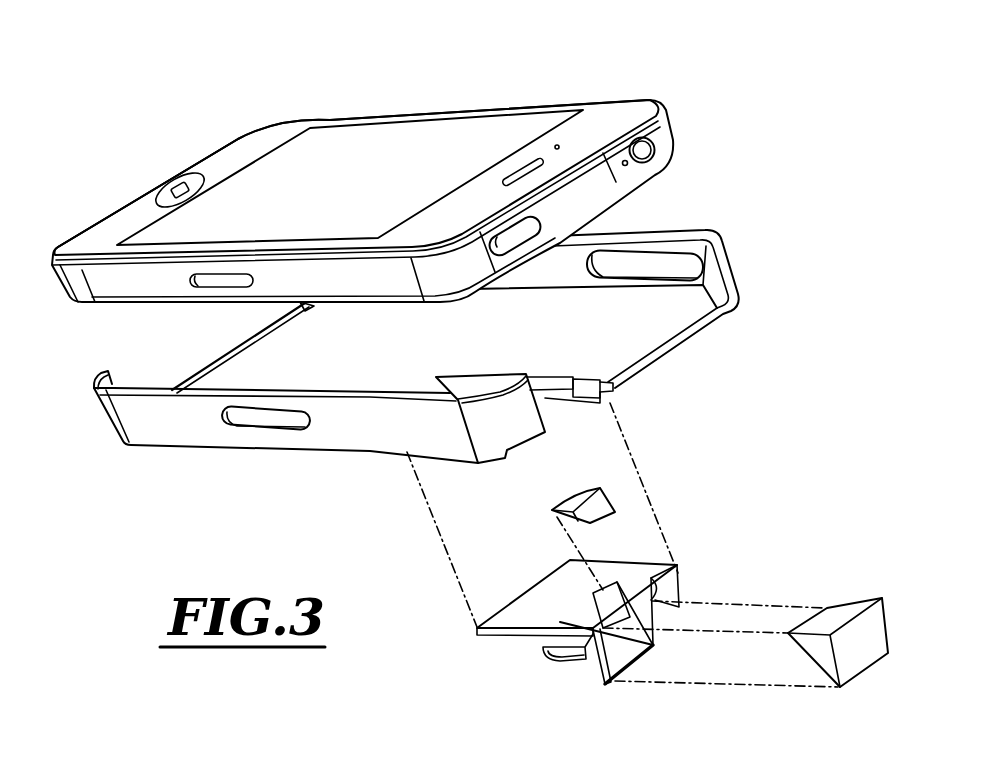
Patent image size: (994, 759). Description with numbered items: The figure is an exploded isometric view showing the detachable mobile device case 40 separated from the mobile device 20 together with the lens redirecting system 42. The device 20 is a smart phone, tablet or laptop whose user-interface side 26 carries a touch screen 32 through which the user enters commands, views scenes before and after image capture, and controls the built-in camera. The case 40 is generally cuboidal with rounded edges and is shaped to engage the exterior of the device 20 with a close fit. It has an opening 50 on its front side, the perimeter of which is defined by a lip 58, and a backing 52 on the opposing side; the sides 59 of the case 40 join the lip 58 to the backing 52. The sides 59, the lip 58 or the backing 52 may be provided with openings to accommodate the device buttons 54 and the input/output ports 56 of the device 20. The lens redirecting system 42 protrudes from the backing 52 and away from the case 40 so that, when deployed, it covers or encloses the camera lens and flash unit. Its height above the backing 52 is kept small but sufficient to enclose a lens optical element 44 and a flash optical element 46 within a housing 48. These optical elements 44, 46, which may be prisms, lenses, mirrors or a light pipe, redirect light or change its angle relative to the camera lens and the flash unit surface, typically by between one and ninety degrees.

The mobile device 20 is at (407, 179).
The user-interface side 26 is at (241, 145).
The touch screen 32 is at (402, 150).
The mobile device case 40 is at (730, 256).
The lens redirecting system 42 is at (566, 643).
The lens optical element 44 is at (848, 610).
The flash optical element 46 is at (580, 494).
The housing 48 is at (590, 668).
The opening 50 is at (319, 411).
The backing 52 is at (372, 363).
The device buttons 54 is at (523, 233).
The input/output ports 56 is at (648, 150).
The lip 58 is at (392, 398).
The sides 59 is at (340, 430).